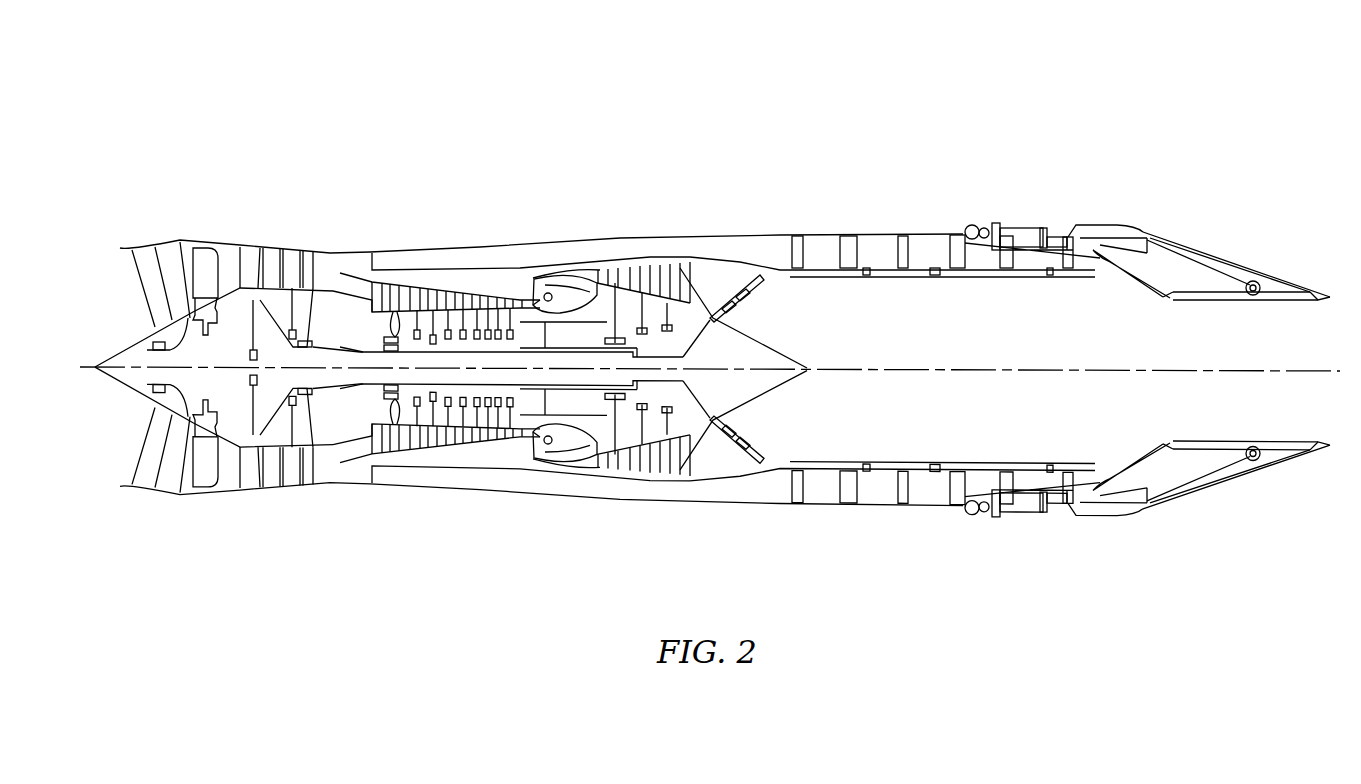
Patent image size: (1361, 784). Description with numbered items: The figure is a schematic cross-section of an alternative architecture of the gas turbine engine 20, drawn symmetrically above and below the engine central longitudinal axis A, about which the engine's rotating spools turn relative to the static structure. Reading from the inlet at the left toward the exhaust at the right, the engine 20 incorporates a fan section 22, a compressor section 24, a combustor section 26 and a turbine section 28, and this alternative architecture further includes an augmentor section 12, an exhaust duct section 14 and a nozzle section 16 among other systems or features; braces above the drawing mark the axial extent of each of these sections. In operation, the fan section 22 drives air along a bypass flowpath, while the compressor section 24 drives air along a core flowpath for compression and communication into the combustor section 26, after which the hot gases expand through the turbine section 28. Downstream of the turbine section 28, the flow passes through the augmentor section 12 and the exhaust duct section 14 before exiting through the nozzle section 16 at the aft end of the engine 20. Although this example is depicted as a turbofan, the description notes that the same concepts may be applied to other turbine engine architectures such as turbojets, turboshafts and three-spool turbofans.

The gas turbine engine 20 is at (979, 84).
The fan section 22 is at (327, 177).
The compressor section 24 is at (542, 177).
The combustor section 26 is at (613, 177).
The turbine section 28 is at (688, 177).
The augmentor section 12 is at (688, 177).
The exhaust duct section 14 is at (1083, 177).
The nozzle section 16 is at (1328, 177).
The engine central longitudinal axis A is at (1160, 372).